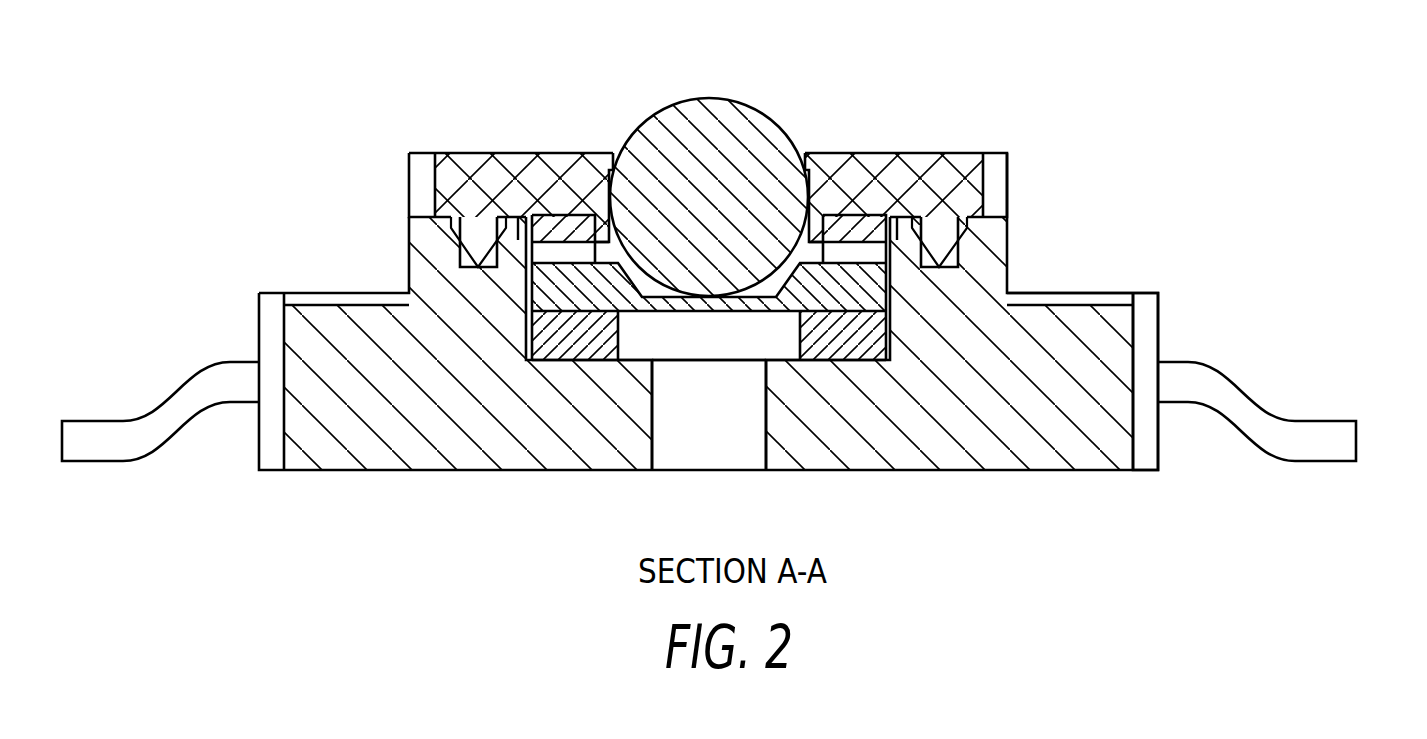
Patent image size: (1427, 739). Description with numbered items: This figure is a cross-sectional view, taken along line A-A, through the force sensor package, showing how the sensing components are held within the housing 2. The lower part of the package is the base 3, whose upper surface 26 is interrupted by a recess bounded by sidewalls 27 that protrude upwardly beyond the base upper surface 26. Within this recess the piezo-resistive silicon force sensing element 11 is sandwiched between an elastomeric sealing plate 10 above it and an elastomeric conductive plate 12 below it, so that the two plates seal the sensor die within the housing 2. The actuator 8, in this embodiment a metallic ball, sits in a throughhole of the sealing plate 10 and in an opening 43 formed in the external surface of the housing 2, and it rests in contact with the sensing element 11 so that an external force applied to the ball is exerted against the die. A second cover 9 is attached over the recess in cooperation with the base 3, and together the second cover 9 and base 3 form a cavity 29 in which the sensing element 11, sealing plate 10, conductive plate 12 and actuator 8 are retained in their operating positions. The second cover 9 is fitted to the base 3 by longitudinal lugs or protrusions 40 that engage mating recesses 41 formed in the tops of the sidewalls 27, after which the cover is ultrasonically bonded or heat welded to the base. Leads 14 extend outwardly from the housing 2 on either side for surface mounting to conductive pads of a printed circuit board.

The housing 2 is at (437, 470).
The base 3 is at (1047, 415).
The actuator 8 is at (735, 97).
The second cover 9 is at (950, 153).
The elastomeric sealing plate 10 is at (866, 215).
The force sensing element 11 is at (868, 284).
The elastomeric conductive plate 12 is at (845, 332).
The leads 14 is at (1328, 420).
The base upper surface 26 is at (1122, 292).
The sidewalls 27 is at (1008, 237).
The cavity 29 is at (635, 363).
The longitudinal lugs 40 is at (480, 242).
The mating recesses 41 is at (470, 268).
The opening 43 is at (803, 160).